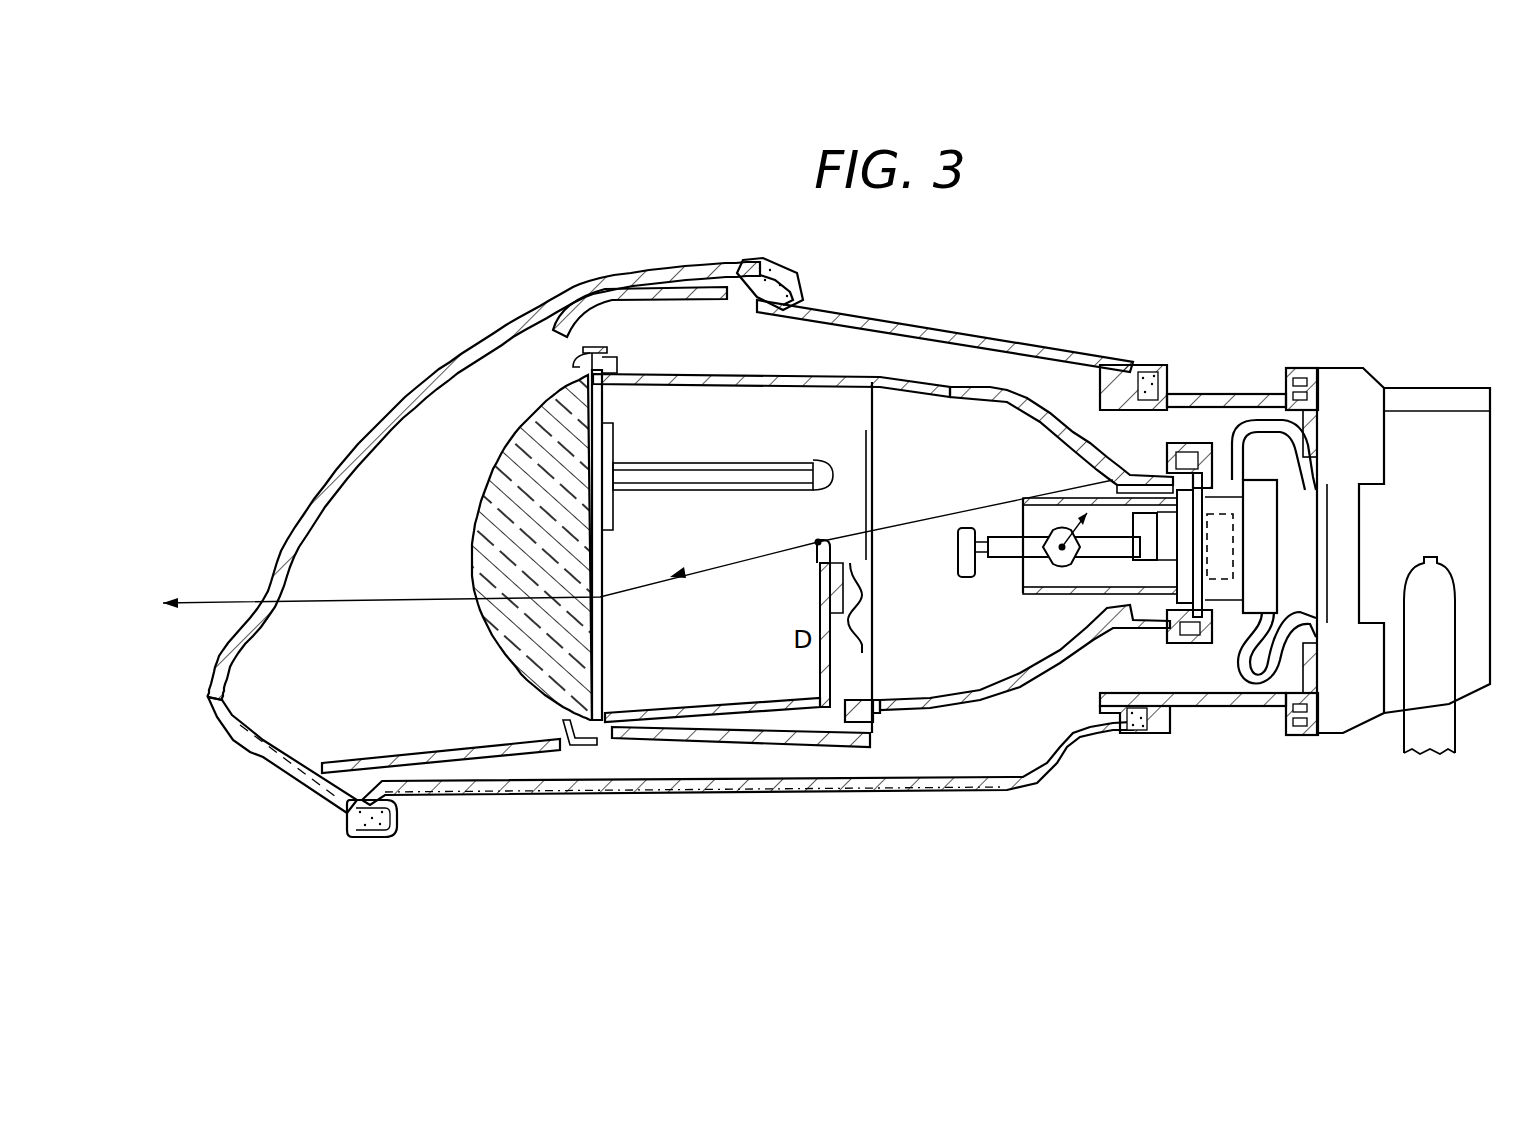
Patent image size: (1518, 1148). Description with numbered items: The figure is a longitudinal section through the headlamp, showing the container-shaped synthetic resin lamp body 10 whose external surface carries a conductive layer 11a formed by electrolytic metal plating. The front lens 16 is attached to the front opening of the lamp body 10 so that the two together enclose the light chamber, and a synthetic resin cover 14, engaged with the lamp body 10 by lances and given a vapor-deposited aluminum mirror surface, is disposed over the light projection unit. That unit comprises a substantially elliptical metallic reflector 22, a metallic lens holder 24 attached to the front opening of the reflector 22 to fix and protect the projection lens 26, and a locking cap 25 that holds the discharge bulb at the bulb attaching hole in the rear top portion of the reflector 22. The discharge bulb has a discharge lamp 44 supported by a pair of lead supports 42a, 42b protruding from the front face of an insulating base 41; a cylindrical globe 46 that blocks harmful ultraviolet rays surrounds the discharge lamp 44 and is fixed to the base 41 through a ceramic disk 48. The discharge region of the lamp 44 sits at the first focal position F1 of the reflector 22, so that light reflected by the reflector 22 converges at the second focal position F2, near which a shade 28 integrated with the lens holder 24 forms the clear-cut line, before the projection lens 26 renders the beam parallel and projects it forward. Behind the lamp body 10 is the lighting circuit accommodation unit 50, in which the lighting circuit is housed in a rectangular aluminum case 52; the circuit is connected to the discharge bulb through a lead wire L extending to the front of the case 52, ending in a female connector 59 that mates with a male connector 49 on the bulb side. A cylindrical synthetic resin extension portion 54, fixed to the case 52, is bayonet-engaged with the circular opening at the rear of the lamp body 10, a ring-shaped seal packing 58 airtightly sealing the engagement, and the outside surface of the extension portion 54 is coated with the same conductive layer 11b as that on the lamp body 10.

The lamp body 10 is at (840, 792).
The conductive layer 11a is at (935, 322).
The conductive layer 11b is at (1237, 398).
The cover 14 is at (437, 753).
The front lens 16 is at (483, 343).
The reflector 22 is at (990, 390).
The lens holder 24 is at (705, 373).
The locking cap 25 is at (1193, 447).
The projection lens 26 is at (510, 440).
The shade 28 is at (1025, 588).
The insulating base 41 is at (1200, 643).
The lead support 42a is at (982, 580).
The lead support 42b is at (1153, 517).
The discharge lamp 44 is at (1067, 587).
The cylindrical globe 46 is at (1040, 597).
The ceramic disk 48 is at (1180, 643).
The male connector 49 is at (1227, 580).
The lighting circuit accommodation unit 50 is at (1339, 356).
The case 52 is at (1429, 394).
The extension portion 54 is at (1262, 392).
The seal packing 58 is at (1143, 740).
The female connector 59 is at (1272, 583).
The first focal position F1 is at (1053, 527).
The second focal position F2 is at (815, 541).
The lead wire L is at (1290, 443).